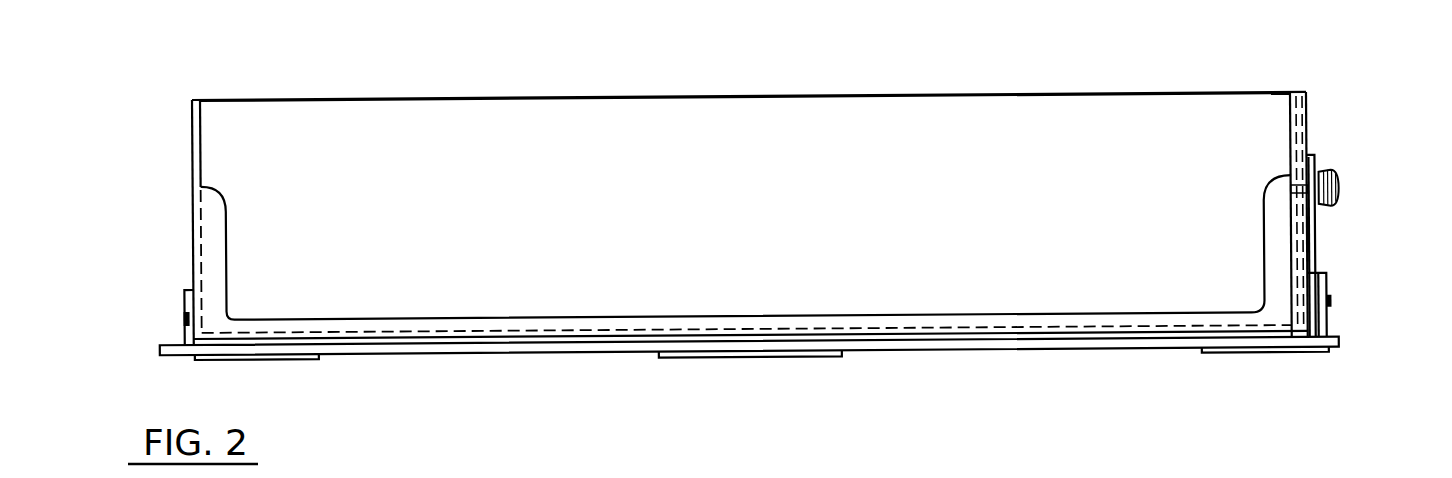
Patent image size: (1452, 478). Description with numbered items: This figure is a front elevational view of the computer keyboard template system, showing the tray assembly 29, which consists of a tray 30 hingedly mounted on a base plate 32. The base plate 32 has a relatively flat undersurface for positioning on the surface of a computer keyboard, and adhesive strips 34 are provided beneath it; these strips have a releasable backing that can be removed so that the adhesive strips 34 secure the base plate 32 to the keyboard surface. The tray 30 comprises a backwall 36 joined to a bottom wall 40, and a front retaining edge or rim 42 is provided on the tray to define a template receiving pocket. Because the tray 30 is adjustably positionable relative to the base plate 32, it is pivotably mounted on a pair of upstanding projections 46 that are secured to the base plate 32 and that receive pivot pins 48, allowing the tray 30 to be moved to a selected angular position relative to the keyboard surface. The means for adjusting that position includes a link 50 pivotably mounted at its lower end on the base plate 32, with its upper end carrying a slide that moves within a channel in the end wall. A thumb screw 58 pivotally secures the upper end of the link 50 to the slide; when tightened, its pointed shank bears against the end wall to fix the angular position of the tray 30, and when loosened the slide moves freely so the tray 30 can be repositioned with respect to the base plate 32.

The tray assembly 29 is at (180, 181).
The tray 30 is at (1299, 78).
The base plate 32 is at (178, 345).
The adhesive strips 34 is at (275, 358).
The backwall 36 is at (843, 125).
The bottom wall 40 is at (265, 336).
The front retaining edge or rim 42 is at (472, 330).
The upstanding projections 46 is at (182, 290).
The pivot pins 48 is at (182, 318).
The link 50 is at (1313, 232).
The thumb screw 58 is at (1338, 190).